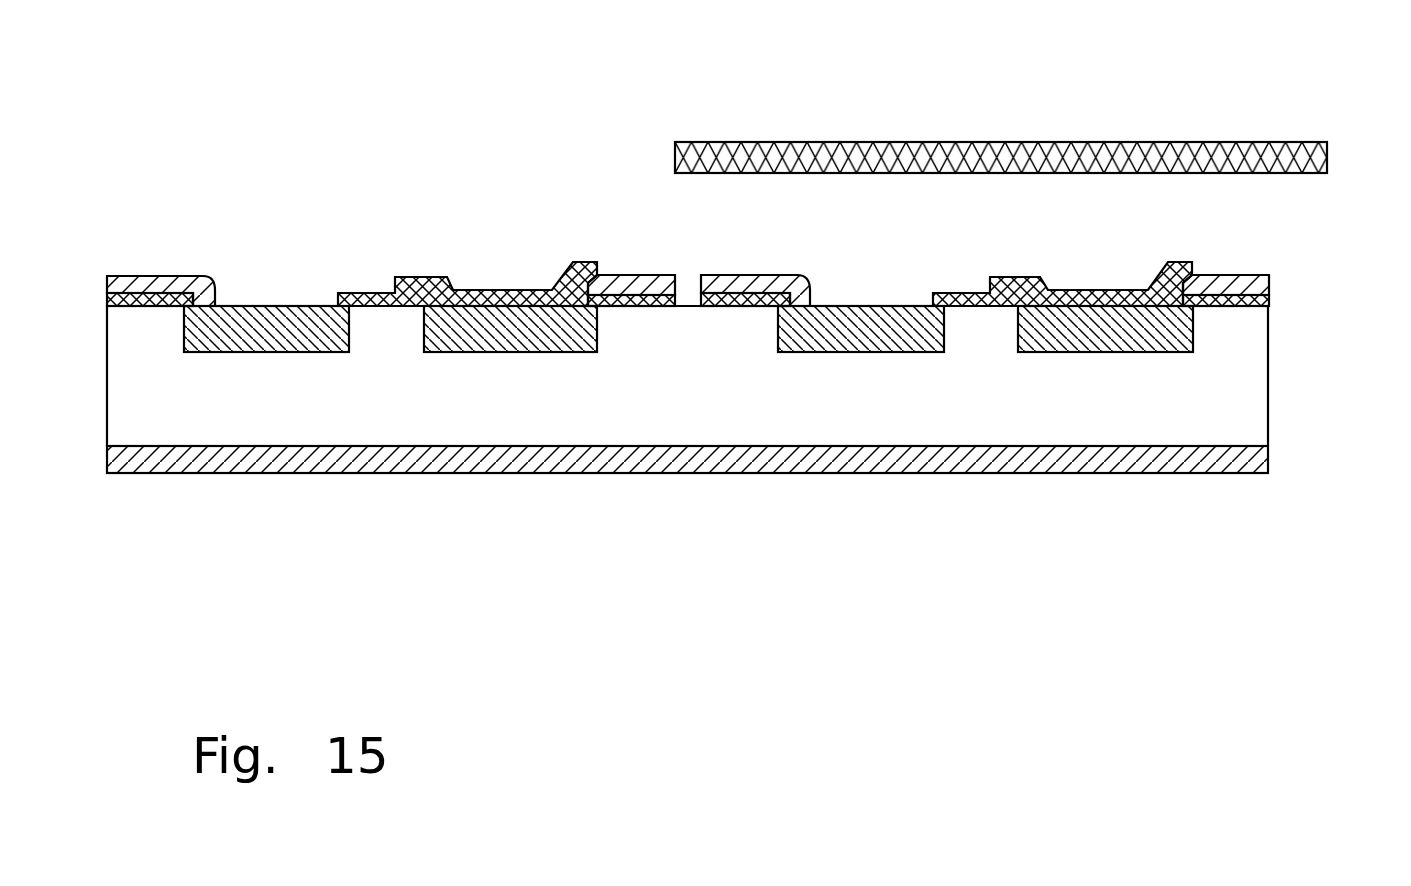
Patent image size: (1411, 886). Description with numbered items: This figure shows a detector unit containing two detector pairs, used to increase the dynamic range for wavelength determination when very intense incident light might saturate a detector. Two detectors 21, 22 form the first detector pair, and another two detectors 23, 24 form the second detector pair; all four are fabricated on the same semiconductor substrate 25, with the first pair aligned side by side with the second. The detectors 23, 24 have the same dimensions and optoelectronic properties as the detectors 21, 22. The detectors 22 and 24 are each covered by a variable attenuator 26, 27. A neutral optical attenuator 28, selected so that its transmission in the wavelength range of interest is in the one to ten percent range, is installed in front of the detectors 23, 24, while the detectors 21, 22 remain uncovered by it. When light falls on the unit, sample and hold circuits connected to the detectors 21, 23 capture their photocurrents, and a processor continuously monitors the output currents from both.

The detector 21 is at (375, 497).
The detector 22 is at (506, 402).
The detector 23 is at (725, 497).
The detector 24 is at (1134, 418).
The semiconductor substrate 25 is at (1210, 402).
The variable attenuator 26 is at (487, 297).
The variable attenuator 27 is at (1113, 288).
The neutral optical attenuator 28 is at (1142, 137).